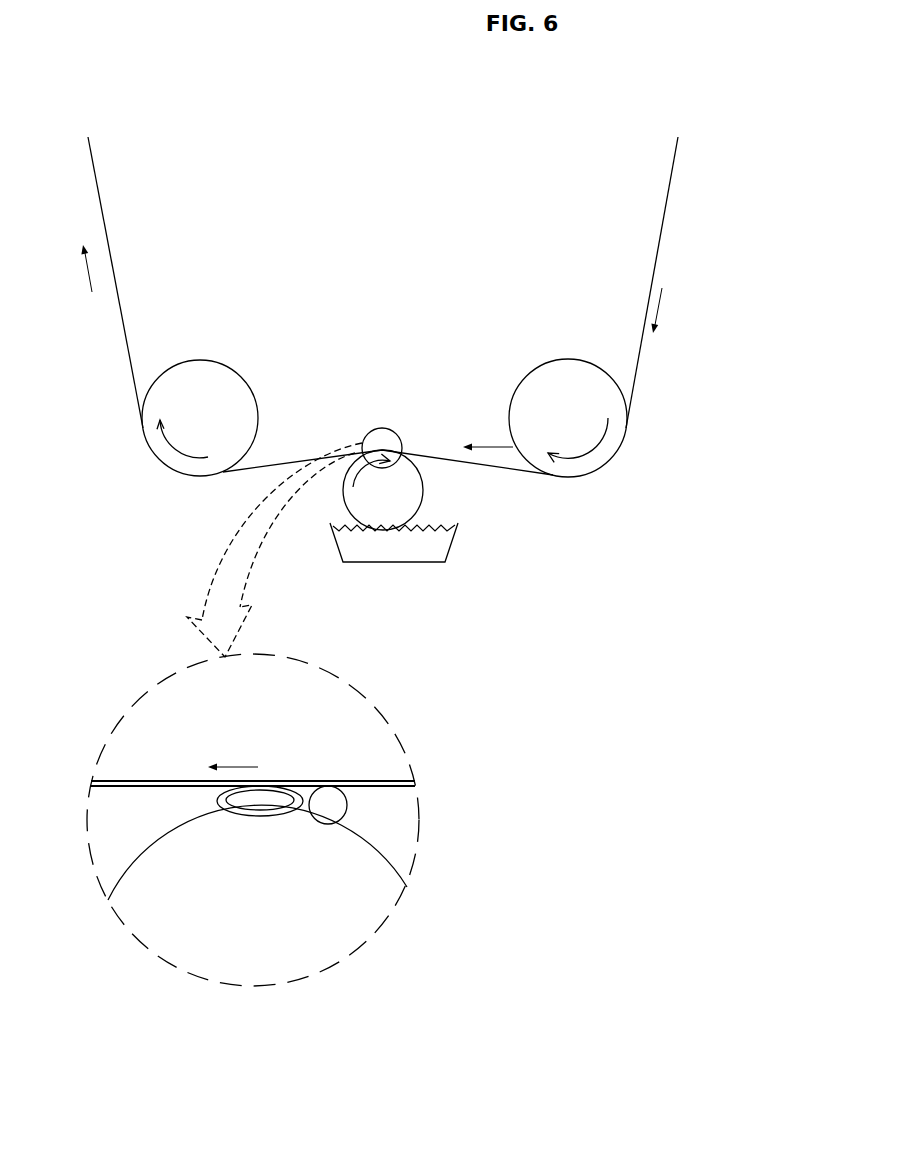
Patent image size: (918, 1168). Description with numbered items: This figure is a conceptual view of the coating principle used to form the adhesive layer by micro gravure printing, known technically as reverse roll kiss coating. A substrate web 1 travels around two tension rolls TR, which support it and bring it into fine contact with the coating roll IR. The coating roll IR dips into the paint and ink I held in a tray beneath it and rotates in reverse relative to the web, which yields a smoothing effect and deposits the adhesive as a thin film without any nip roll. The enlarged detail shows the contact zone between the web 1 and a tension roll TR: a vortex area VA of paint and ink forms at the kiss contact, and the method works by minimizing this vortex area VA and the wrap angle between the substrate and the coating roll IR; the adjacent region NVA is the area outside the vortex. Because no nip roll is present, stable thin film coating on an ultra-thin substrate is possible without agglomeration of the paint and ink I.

The transfer belt 1 is at (652, 364).
The tension roll TR is at (212, 372).
The coating roll IR is at (415, 488).
The paint and ink I is at (440, 548).
The non-vacuum area NVA is at (277, 800).
The vortex area VA is at (328, 800).